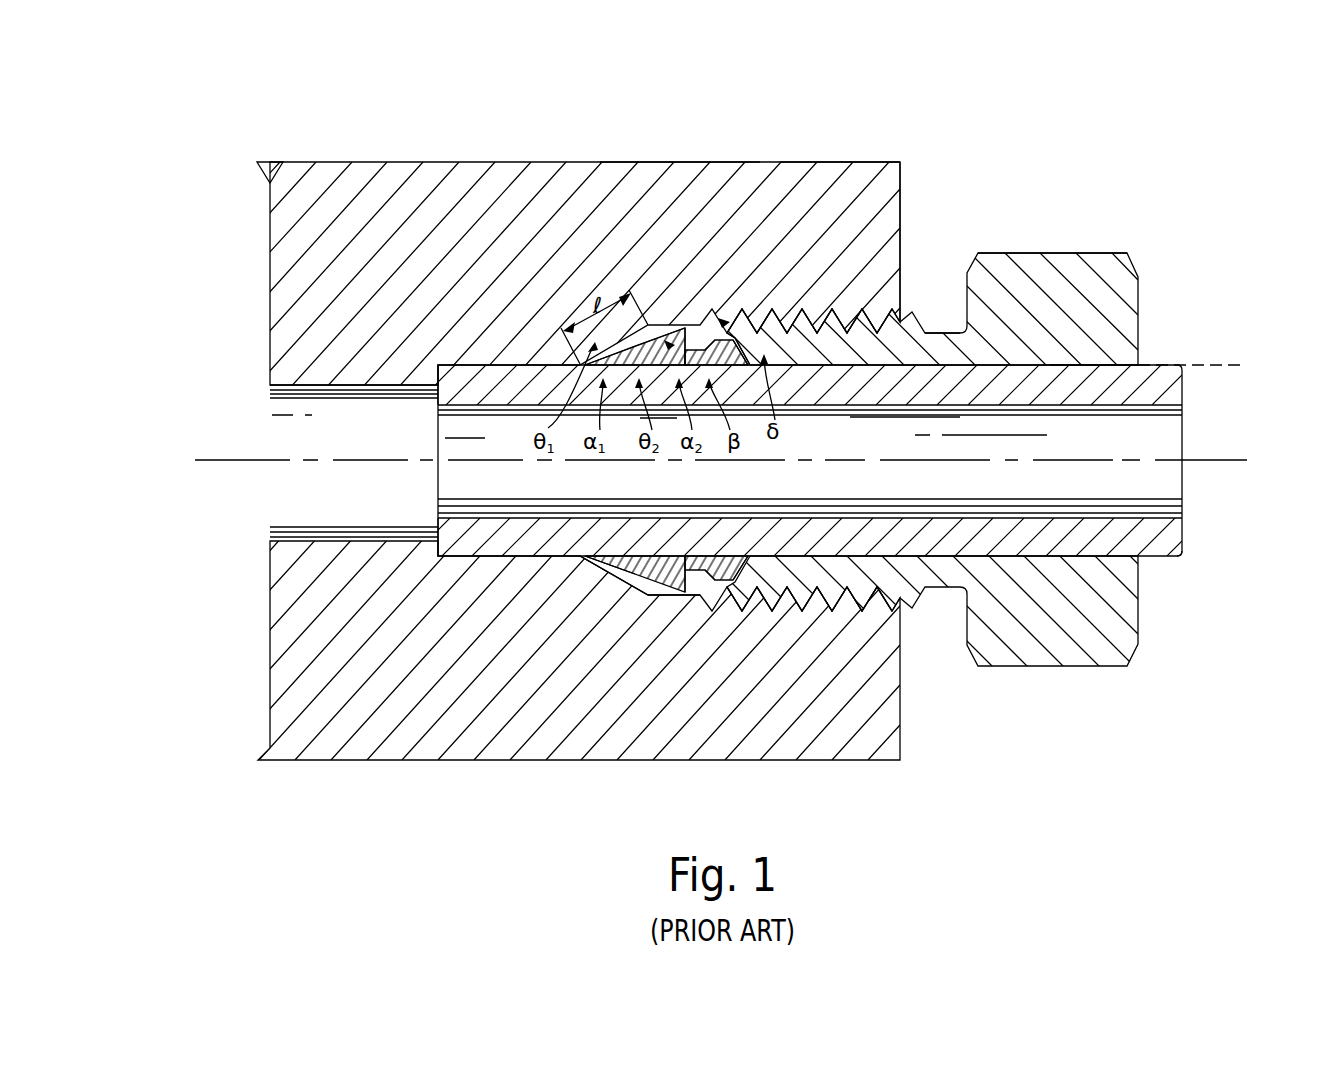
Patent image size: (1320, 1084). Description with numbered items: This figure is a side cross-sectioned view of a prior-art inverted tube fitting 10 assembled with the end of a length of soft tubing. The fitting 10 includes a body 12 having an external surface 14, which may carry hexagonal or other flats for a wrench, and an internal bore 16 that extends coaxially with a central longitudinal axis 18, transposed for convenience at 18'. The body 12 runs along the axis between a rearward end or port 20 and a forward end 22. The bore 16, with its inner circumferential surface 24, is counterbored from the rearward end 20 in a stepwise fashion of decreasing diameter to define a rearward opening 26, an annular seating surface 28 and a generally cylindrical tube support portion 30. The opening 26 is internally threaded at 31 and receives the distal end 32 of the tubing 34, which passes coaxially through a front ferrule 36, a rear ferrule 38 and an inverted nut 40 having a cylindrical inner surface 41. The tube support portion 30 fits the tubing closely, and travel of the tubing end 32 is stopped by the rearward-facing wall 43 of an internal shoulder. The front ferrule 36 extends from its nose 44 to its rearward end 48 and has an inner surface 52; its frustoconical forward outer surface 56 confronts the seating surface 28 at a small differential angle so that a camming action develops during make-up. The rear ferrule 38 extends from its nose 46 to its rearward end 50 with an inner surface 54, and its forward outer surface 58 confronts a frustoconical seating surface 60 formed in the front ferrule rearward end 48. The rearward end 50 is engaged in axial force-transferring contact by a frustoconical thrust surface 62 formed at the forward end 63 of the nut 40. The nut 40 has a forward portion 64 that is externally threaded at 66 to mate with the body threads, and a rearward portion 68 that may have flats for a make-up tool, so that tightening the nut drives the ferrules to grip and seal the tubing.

The tube fitting 10 is at (1100, 99).
The body 12 is at (872, 162).
The external surface 14 is at (720, 162).
The internal bore 16 is at (333, 504).
The central longitudinal axis 18 is at (771, 460).
The transposed central longitudinal axis 18' is at (1204, 401).
The rearward end or port 20 is at (900, 197).
The forward end 22 is at (270, 228).
The inner circumferential surface 24 is at (325, 382).
The rearward opening 26 is at (710, 594).
The annular seating surface 28 is at (588, 548).
The tube support portion 30 is at (500, 385).
The internal threads 31 is at (848, 333).
The distal end of tubing 32 is at (438, 390).
The tubing 34 is at (1185, 548).
The front ferrule 36 is at (670, 597).
The rear ferrule 38 is at (750, 580).
The inverted nut 40 is at (1138, 275).
The nut inner surface 41 is at (1090, 365).
The rearward-facing wall 43 is at (438, 527).
The front ferrule nose 44 is at (585, 560).
The rear ferrule nose 46 is at (680, 575).
The front ferrule rearward end 48 is at (690, 598).
The rear ferrule rearward end 50 is at (772, 580).
The front ferrule inner surface 52 is at (592, 560).
The rear ferrule inner surface 54 is at (723, 567).
The front ferrule forward outer surface 56 is at (647, 597).
The rear ferrule forward outer surface 58 is at (707, 595).
The front ferrule seating surface 60 is at (643, 560).
The thrust surface 62 is at (730, 592).
The nut forward end 63 is at (793, 595).
The nut forward portion 64 is at (935, 333).
The external threads 66 is at (762, 333).
The nut rearward portion 68 is at (1045, 253).